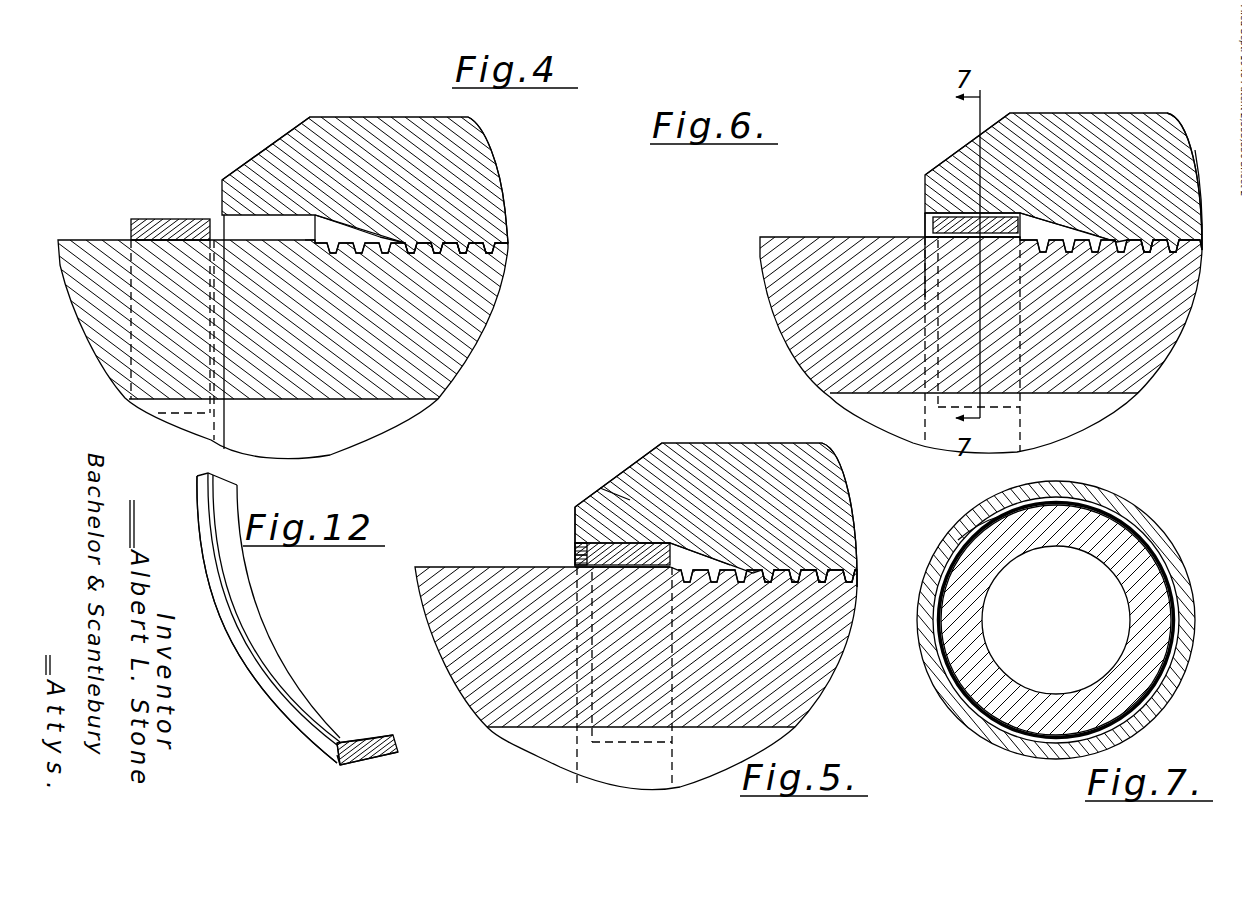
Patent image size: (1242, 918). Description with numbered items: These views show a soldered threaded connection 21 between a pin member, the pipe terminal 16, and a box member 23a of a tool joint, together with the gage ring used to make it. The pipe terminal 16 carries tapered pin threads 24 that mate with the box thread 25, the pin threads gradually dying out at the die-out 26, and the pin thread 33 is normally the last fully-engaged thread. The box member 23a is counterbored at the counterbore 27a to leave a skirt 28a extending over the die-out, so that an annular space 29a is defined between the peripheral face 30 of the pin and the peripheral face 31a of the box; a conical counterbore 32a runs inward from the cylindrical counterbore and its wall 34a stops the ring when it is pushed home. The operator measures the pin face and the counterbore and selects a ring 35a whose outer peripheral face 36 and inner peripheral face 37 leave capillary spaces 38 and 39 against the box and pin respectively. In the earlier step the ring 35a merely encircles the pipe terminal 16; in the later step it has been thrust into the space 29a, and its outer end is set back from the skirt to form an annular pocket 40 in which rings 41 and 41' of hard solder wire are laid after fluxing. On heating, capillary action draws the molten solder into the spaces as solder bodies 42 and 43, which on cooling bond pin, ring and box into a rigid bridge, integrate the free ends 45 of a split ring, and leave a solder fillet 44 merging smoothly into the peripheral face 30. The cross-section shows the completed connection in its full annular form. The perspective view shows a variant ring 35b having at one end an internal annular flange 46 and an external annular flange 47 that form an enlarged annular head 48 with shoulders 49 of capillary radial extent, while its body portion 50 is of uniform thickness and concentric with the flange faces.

In FIG. 4, the pipe terminal 16 is at (397, 383).
In FIG. 6, the pipe terminal 16 is at (1087, 373).
In FIG. 5, the pipe terminal 16 is at (731, 708).
In FIG. 7, the pipe terminal 16 is at (1054, 532).
In FIG. 6, the connection 21 is at (1163, 230).
In FIG. 4, the box member 23a is at (369, 148).
In FIG. 6, the box member 23a is at (1077, 135).
In FIG. 5, the box member 23a is at (758, 475).
In FIG. 7, the box member 23a is at (1174, 571).
In FIG. 4, the pin threads 24 is at (486, 255).
In FIG. 6, the pin threads 24 is at (1158, 252).
In FIG. 5, the pin threads 24 is at (836, 588).
In FIG. 4, the box thread 25 is at (471, 210).
In FIG. 6, the box thread 25 is at (1174, 237).
In FIG. 5, the box thread 25 is at (824, 577).
In FIG. 4, the thread die-out 26 is at (316, 241).
In FIG. 4, the counterbore 27a is at (298, 212).
In FIG. 6, the counterbore 27a is at (1022, 222).
In FIG. 4, the skirt 28a is at (271, 160).
In FIG. 6, the skirt 28a is at (960, 173).
In FIG. 5, the skirt 28a is at (613, 490).
In FIG. 4, the space 29a is at (265, 226).
In FIG. 5, the space 29a is at (578, 548).
In FIG. 4, the peripheral face 30 is at (252, 232).
In FIG. 6, the peripheral face 30 is at (933, 231).
In FIG. 5, the peripheral face 30 is at (627, 562).
In FIG. 4, the peripheral face 31a is at (236, 218).
In FIG. 5, the peripheral face 31a is at (582, 533).
In FIG. 4, the conical counterbore 32a is at (336, 228).
In FIG. 6, the conical counterbore 32a is at (1041, 224).
In FIG. 5, the conical counterbore 32a is at (696, 557).
In FIG. 4, the pin thread 33 is at (460, 256).
In FIG. 6, the pin thread 33 is at (1150, 250).
In FIG. 5, the pin thread 33 is at (816, 588).
In FIG. 4, the wall 34a is at (398, 228).
In FIG. 6, the wall 34a is at (1056, 230).
In FIG. 5, the wall 34a is at (681, 552).
In FIG. 4, the ring 35a is at (140, 232).
In FIG. 6, the ring 35a is at (940, 222).
In FIG. 5, the ring 35a is at (640, 566).
In FIG. 7, the ring 35a is at (1101, 511).
In FIG. 12, the ring 35b is at (277, 720).
In FIG. 4, the outer peripheral face 36 is at (147, 219).
In FIG. 5, the outer peripheral face 36 is at (653, 540).
In FIG. 12, the outer peripheral face 36 is at (384, 757).
In FIG. 12, the inner peripheral face 37 is at (242, 605).
In FIG. 5, the capillary space 38 is at (625, 492).
In FIG. 5, the capillary space 39 is at (590, 572).
In FIG. 5, the annular pocket 40 is at (577, 552).
In FIG. 5, the ring of hard solder wire 41 is at (548, 552).
In FIG. 5, the ring of hard solder wire 41' is at (524, 513).
In FIG. 6, the solder body 42 is at (943, 212).
In FIG. 7, the solder body 42 is at (1148, 524).
In FIG. 6, the solder body 43 is at (932, 238).
In FIG. 7, the solder body 43 is at (1168, 538).
In FIG. 6, the solder fillet 44 is at (932, 234).
In FIG. 7, the free ends 45 is at (959, 541).
In FIG. 12, the internal annular flange 46 is at (342, 766).
In FIG. 12, the external annular flange 47 is at (351, 740).
In FIG. 12, the annular head 48 is at (342, 740).
In FIG. 12, the annular shoulder 49 is at (381, 734).
In FIG. 12, the body portion 50 is at (358, 731).